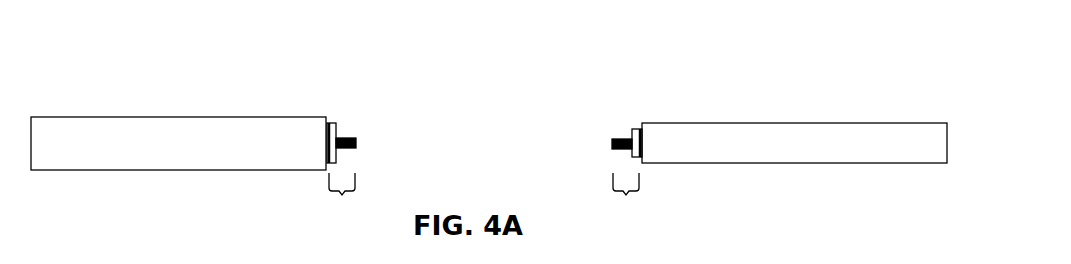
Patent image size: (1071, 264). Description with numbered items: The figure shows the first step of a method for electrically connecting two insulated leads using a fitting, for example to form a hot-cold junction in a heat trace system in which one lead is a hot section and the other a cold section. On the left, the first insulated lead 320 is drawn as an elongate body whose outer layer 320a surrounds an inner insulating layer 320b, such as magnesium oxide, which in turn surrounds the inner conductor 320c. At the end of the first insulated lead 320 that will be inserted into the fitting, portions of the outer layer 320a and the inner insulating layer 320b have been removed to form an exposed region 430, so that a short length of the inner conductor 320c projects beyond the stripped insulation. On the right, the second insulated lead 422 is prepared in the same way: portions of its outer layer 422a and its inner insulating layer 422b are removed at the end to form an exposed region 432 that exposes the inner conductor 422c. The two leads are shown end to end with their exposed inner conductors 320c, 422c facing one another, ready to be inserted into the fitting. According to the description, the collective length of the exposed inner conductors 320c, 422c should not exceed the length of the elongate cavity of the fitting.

The first insulated lead 320 is at (93, 143).
The outer layer 320a is at (190, 125).
The inner insulating layer 320b is at (330, 118).
The inner conductor 320c is at (357, 143).
The exposed region 430 is at (342, 196).
The second insulated lead 422 is at (835, 128).
The outer layer 422a is at (763, 140).
The inner insulating layer 422b is at (636, 128).
The inner conductor 422c is at (612, 143).
The exposed region 432 is at (626, 196).